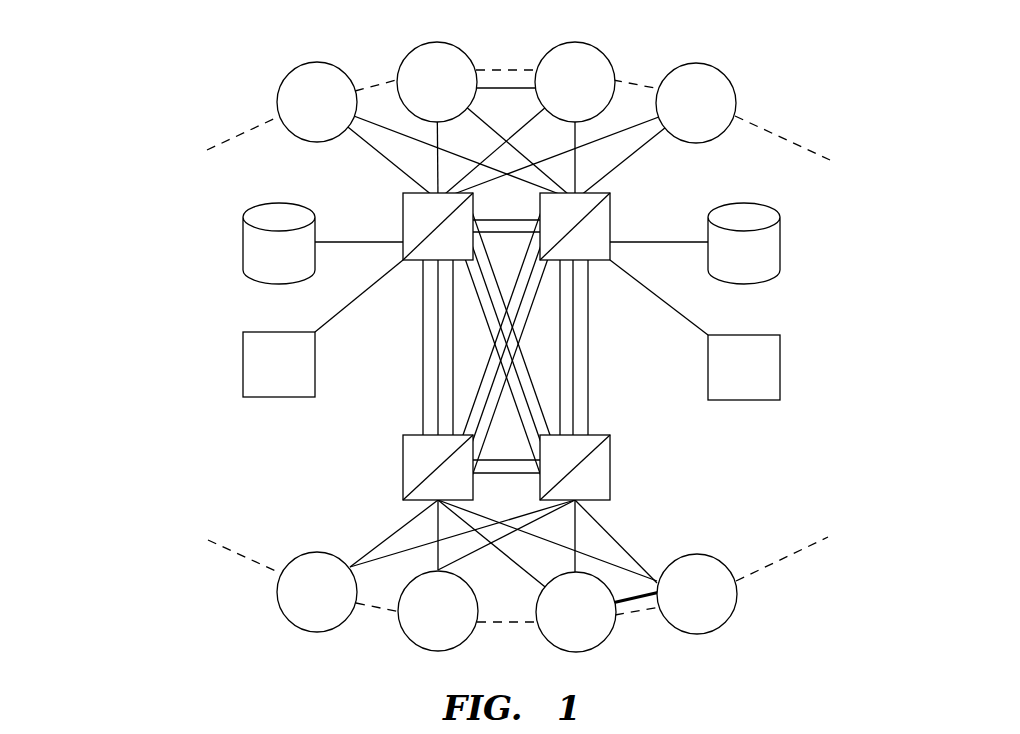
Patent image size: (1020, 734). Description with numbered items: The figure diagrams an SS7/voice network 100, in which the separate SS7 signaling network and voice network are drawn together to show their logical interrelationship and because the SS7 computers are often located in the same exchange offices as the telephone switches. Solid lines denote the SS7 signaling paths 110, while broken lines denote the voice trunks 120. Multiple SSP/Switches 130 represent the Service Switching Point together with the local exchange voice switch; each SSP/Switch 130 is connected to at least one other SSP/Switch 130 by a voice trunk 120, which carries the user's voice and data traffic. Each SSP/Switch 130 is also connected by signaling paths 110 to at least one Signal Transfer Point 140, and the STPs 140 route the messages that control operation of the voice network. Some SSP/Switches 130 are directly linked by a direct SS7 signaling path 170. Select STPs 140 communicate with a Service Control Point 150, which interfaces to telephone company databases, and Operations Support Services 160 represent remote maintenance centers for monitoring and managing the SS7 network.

The SS7/voice network 100 is at (454, 339).
The signaling paths 110 is at (588, 372).
The voice trunks 120 is at (778, 560).
The SSP/Switch 130 is at (715, 63).
The Signal Transfer Point 140 is at (610, 470).
The Service Control Point 150 is at (243, 246).
The Operations Support Services 160 is at (243, 366).
The direct SS7 signaling path 170 is at (503, 90).